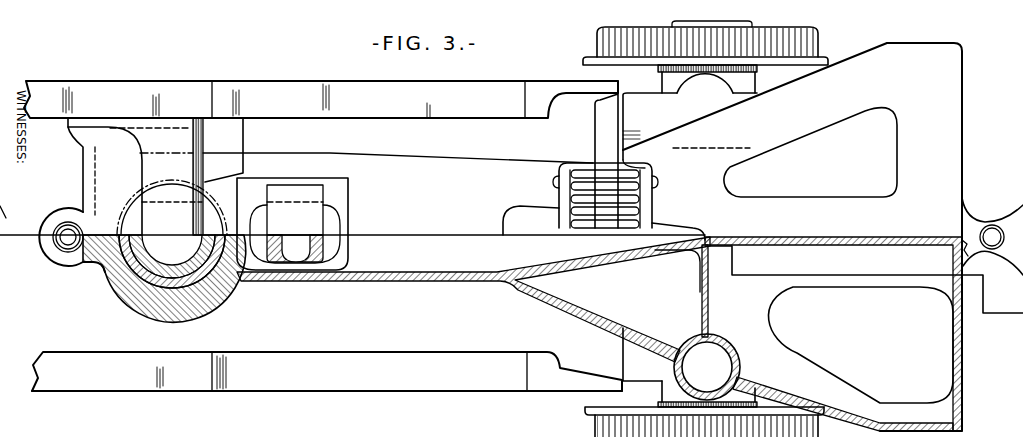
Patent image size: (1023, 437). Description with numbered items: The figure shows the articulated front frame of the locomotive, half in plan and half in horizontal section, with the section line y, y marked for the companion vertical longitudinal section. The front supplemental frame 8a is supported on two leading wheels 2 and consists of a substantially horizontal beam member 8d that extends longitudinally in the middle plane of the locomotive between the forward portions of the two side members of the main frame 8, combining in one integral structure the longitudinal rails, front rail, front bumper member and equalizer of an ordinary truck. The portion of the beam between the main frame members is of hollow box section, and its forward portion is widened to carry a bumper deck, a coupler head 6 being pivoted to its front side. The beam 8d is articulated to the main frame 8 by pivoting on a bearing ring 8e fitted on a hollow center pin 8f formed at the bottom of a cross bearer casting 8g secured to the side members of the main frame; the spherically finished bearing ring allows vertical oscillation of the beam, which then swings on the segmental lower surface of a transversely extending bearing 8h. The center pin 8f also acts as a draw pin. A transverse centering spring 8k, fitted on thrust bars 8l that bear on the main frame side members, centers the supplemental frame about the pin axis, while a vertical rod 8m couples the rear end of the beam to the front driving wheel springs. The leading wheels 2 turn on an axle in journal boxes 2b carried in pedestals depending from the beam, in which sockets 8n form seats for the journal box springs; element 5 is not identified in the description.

The main frame 8 is at (345, 97).
The front supplemental frame 8a is at (327, 413).
The beam member 8d is at (398, 282).
The bearing ring 8e is at (143, 287).
The hollow center pin 8f is at (180, 203).
The cross bearer casting 8g is at (100, 175).
The transversely extending bearing 8h is at (333, 243).
The transverse centering spring 8k is at (633, 198).
The thrust bars 8l is at (603, 141).
The vertical rod 8m is at (66, 243).
The sockets 8n is at (703, 103).
The leading wheels 2 is at (797, 52).
The journal boxes 2b is at (737, 393).
The coupler head 6 is at (1022, 200).
The frame member 5 is at (866, 298).
The section line y y is at (352, 249).